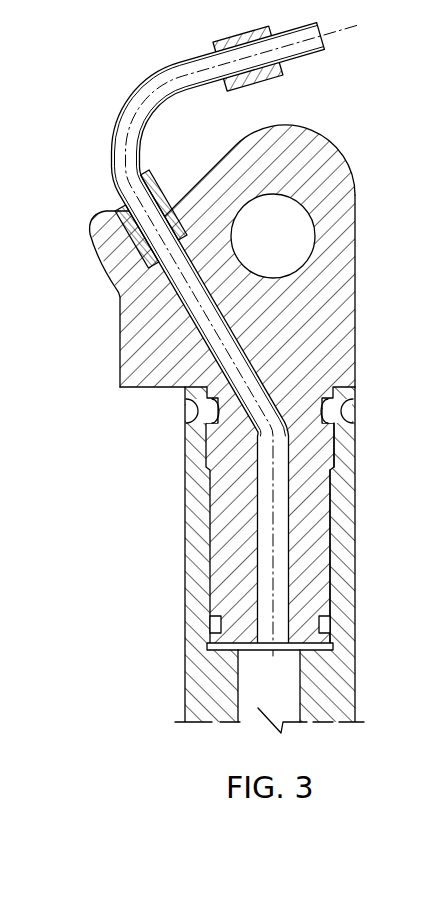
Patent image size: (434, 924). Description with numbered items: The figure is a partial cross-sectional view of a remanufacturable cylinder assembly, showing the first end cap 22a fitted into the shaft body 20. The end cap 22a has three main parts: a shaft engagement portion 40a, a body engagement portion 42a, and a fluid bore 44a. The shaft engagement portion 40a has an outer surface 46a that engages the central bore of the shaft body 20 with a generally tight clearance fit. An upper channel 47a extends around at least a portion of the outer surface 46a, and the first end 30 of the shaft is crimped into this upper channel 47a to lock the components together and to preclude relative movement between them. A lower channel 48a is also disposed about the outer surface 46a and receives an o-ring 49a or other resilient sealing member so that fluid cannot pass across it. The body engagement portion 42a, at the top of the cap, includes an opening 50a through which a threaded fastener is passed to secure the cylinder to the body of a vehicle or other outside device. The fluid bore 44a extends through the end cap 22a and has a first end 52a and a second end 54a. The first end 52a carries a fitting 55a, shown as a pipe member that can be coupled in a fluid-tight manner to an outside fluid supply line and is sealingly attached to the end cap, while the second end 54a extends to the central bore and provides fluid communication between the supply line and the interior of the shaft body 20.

The shaft body 20 is at (183, 628).
The first end of the shaft 30 is at (183, 503).
The first end cap 22a is at (351, 268).
The shaft engagement portion 40a is at (333, 508).
The body engagement portion 42a is at (336, 128).
The fluid bore 44a is at (168, 309).
The outer surface 46a is at (333, 532).
The upper channel 47a is at (331, 408).
The lower channel 48a is at (322, 621).
The o-ring 49a is at (333, 639).
The opening 50a is at (283, 214).
The first end 52a is at (120, 291).
The second end 54a is at (256, 651).
The fitting 55a is at (105, 121).